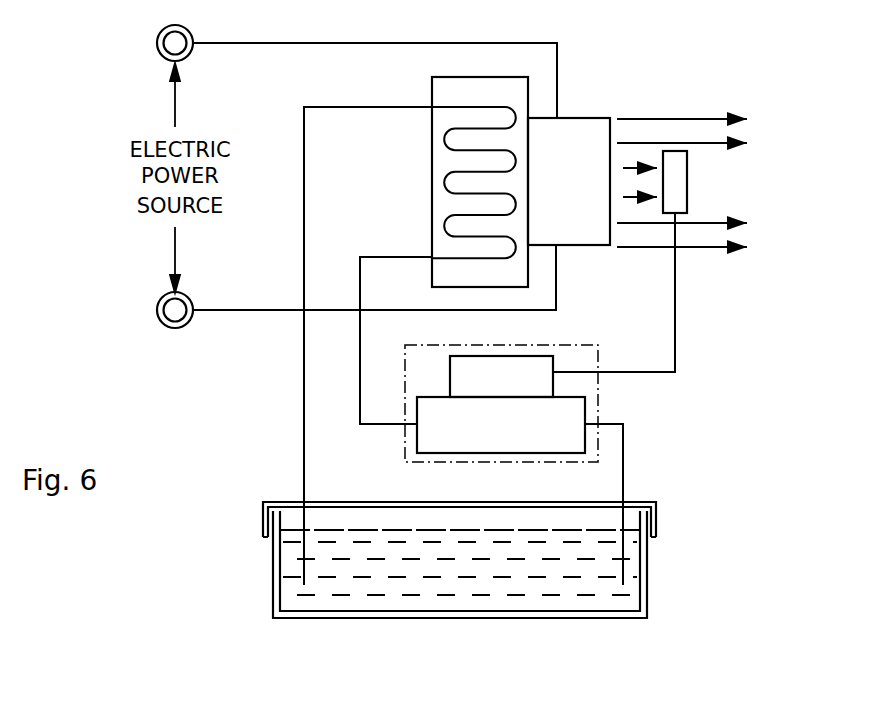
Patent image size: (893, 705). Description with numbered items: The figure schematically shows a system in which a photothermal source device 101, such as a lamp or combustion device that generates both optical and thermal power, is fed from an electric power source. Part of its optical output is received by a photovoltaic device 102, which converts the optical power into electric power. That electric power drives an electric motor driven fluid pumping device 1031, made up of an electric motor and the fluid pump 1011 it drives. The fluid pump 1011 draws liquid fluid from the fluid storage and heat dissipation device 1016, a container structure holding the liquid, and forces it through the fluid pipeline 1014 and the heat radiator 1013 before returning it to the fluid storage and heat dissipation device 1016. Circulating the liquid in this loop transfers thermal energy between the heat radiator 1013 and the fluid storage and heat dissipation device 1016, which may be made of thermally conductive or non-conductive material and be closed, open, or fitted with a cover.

The photothermal source device 101 is at (575, 137).
The photovoltaic device 102 is at (688, 193).
The fluid pump 1011 is at (498, 455).
The heat radiator 1013 is at (474, 77).
The fluid pipeline 1014 is at (365, 106).
The fluid storage and heat dissipation device 1016 is at (648, 568).
The electric motor driven fluid pumping device 1031 is at (567, 343).